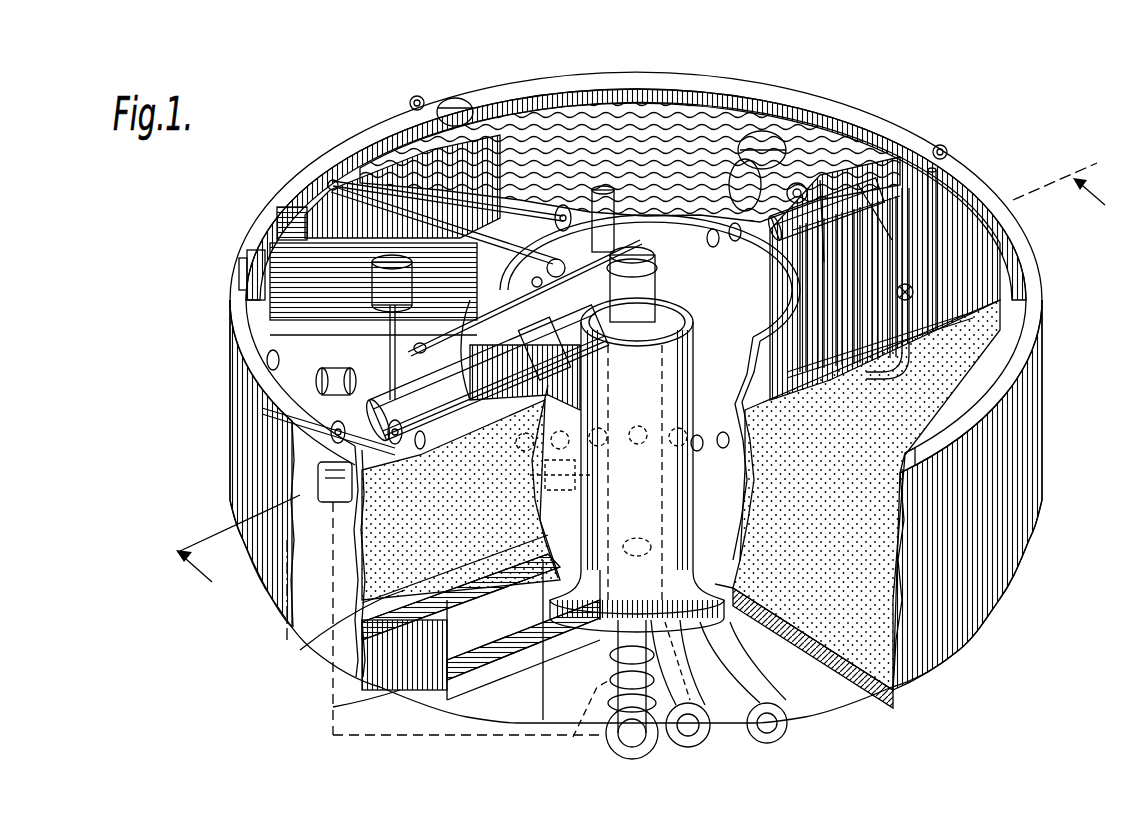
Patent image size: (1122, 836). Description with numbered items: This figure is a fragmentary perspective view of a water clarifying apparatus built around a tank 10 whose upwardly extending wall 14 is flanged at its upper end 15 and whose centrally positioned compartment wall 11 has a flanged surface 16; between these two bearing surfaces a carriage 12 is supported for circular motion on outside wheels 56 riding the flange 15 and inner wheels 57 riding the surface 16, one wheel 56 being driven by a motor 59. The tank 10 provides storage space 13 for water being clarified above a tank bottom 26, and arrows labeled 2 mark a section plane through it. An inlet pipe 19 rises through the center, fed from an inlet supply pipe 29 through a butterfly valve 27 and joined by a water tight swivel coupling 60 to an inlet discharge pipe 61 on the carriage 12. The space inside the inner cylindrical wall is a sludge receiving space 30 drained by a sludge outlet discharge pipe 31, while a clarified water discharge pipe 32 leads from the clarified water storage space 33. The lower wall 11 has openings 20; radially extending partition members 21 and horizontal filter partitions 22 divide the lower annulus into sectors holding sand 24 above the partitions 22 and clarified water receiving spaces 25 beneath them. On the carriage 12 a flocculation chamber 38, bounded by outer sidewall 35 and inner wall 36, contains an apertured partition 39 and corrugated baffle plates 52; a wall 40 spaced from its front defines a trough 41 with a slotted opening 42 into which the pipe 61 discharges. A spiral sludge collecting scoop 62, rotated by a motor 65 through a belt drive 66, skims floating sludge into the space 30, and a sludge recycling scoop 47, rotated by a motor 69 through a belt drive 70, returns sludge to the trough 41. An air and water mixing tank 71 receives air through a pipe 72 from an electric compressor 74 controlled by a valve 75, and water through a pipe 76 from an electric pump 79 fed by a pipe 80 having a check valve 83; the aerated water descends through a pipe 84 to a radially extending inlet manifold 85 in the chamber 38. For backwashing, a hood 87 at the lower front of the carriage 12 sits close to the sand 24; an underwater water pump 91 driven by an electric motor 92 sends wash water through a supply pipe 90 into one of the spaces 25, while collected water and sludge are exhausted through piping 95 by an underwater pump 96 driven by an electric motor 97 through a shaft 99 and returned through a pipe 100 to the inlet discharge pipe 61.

The section line 2- 2 is at (642, 401).
The tank 10 is at (1002, 556).
The compartment wall 11 is at (760, 443).
The carriage 12 is at (713, 100).
The storage space 13 is at (853, 504).
The upwardly extending wall 14 is at (1032, 478).
The flanged upper end 15 is at (238, 312).
The flanged surface 16 is at (760, 345).
The inlet pipe 19 is at (687, 296).
The openings 20 is at (470, 572).
The radially extending partition members 21 is at (430, 706).
The horizontally extending partitions 22 is at (333, 707).
The particulate filter material 24 is at (300, 650).
The clarified water receiving spaces 25 is at (483, 700).
The tank bottom 26 is at (885, 690).
The butterfly valve 27 is at (598, 700).
The inlet supply pipe 29 is at (645, 745).
The sludge receiving space 30 is at (682, 342).
The sludge outlet discharge pipe 31 is at (700, 727).
The clarified water discharge pipe 32 is at (313, 473).
The clarified water storage space 33 is at (730, 424).
The outer sidewall 35 is at (576, 120).
The inner wall 36 is at (715, 217).
The flocculation chamber 38 is at (944, 218).
The apertured partition 39 is at (335, 185).
The wall 40 is at (343, 217).
The trough 41 is at (333, 178).
The slotted opening 42 is at (300, 180).
The sludge recycling scoop 47 is at (265, 250).
The corrugated baffle plates 52 is at (566, 125).
The outside wheels 56 is at (416, 95).
The inner wheels 57 is at (566, 205).
The motor 59 is at (453, 98).
The swivel coupling 60 is at (652, 264).
The inlet discharge pipe 61 is at (570, 280).
The spiral sludge collecting scoop 62 is at (460, 368).
The motor 65 is at (322, 372).
The belt drive 66 is at (330, 425).
The motor 69 is at (287, 207).
The belt drive 70 is at (255, 262).
The air and water mixing tank 71 is at (887, 187).
The pipe 72 is at (790, 142).
The electric compressor 74 is at (747, 158).
The valve 75 is at (790, 183).
The pipe 76 is at (857, 183).
The electric pump 79 is at (822, 187).
The pipe 80 is at (913, 250).
The check valve 83 is at (967, 268).
The downwardly depending pipe 84 is at (850, 320).
The inlet manifold 85 is at (826, 365).
The hood 87 is at (410, 508).
The supply pipe 90 is at (570, 480).
The underwater water pump 91 is at (612, 498).
The electric motor 92 is at (627, 200).
The piping 95 is at (448, 470).
The underwater pump 96 is at (405, 455).
The electric motor 97 is at (393, 257).
The shaft 99 is at (392, 350).
The pipe 100 is at (535, 282).